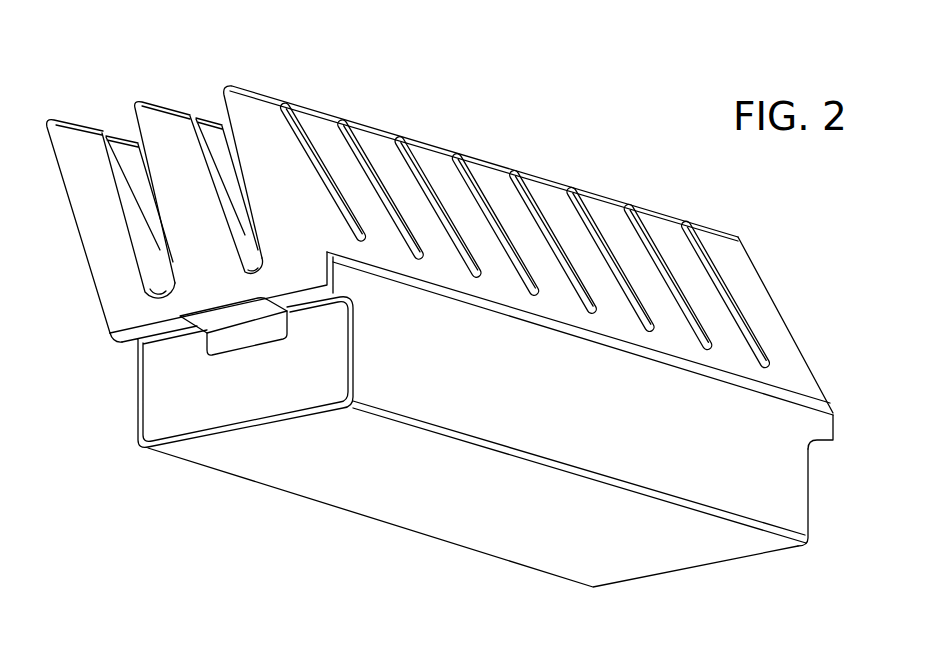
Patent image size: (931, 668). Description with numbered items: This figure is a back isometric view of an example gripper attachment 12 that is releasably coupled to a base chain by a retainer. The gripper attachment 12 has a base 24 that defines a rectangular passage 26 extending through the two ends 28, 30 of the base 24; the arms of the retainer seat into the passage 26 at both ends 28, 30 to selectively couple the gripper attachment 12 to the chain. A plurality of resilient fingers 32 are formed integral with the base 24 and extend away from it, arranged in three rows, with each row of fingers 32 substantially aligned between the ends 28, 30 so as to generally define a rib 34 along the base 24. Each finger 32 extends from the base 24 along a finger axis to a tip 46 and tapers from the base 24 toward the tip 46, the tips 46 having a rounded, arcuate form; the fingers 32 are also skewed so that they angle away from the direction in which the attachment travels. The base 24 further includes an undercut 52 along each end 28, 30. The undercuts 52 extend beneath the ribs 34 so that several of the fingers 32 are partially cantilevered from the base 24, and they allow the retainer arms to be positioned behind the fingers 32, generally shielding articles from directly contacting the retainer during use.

The gripper attachment 12 is at (255, 514).
The base 24 is at (493, 501).
The rectangular passage 26 is at (235, 352).
The end 28 is at (333, 380).
The end 30 is at (812, 510).
The resilient fingers 32 is at (117, 128).
The rib 34 is at (137, 297).
The tip 46 is at (723, 226).
The undercut 52 is at (155, 340).